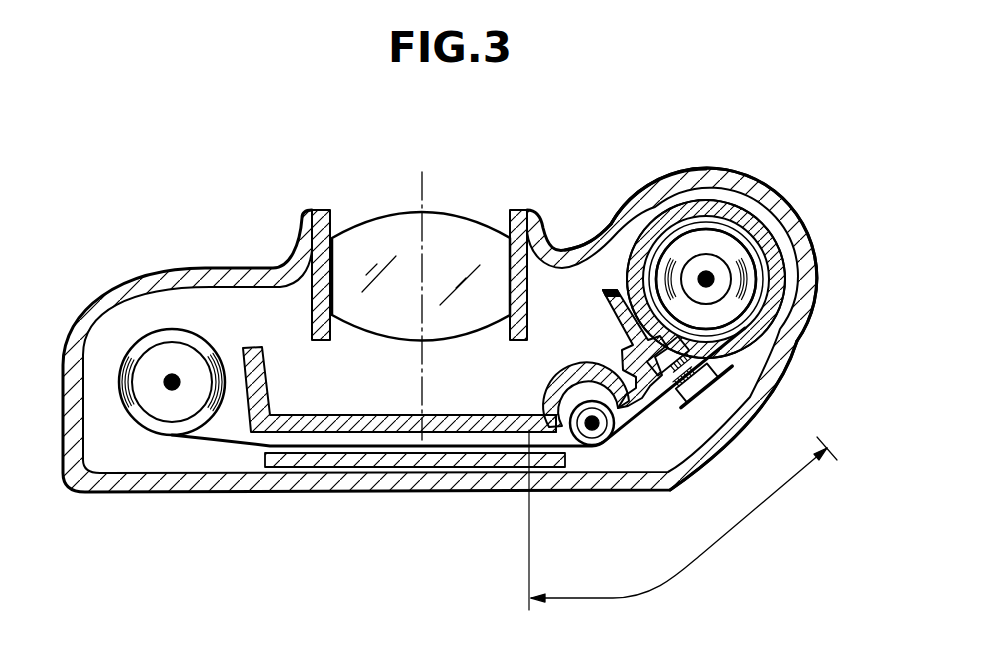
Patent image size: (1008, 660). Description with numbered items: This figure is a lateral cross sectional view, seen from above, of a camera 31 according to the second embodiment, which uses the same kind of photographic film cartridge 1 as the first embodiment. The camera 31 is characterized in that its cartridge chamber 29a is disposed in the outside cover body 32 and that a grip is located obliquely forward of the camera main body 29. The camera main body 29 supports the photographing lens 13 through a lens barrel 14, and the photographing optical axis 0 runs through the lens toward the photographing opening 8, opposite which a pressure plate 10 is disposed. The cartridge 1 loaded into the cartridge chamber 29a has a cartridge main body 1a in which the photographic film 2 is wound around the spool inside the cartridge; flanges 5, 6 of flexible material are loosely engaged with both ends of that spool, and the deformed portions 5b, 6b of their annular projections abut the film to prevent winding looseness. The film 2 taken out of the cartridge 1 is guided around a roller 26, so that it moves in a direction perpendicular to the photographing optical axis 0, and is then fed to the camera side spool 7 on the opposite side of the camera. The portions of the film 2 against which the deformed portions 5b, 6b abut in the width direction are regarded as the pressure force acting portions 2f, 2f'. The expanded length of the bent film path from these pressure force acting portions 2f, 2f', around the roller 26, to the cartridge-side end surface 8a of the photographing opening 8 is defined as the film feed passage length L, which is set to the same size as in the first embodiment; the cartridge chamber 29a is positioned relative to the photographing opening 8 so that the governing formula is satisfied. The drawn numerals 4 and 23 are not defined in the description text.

The photographic film cartridge 1 is at (749, 207).
The cartridge main body 1a is at (768, 225).
The camera 31 is at (675, 160).
The outside cover body 32 is at (646, 182).
The bottom wall portion of frame 4 is at (683, 388).
The photographing optical axis 0 is at (418, 195).
The photographing lens 13 is at (474, 210).
The lens barrel 14 is at (521, 210).
The camera side spool 7 is at (185, 365).
The photographic film 2 is at (352, 448).
The photographing opening 8 is at (470, 424).
The end surface of photographing opening 8a is at (527, 433).
The pressure plate 10 is at (288, 458).
The roller 26 is at (590, 443).
The camera main body 29 is at (632, 396).
The cartridge chamber 29a is at (617, 292).
The pressure force acting portion 2f is at (771, 386).
The pressure force acting portion 2f' is at (747, 385).
The flange 5 is at (762, 297).
The flange 6 is at (706, 279).
The deformed portion 5b is at (745, 335).
The deformed portion 6b is at (706, 279).
The drive shaft 23 is at (707, 268).
The film feed passage length L is at (683, 520).